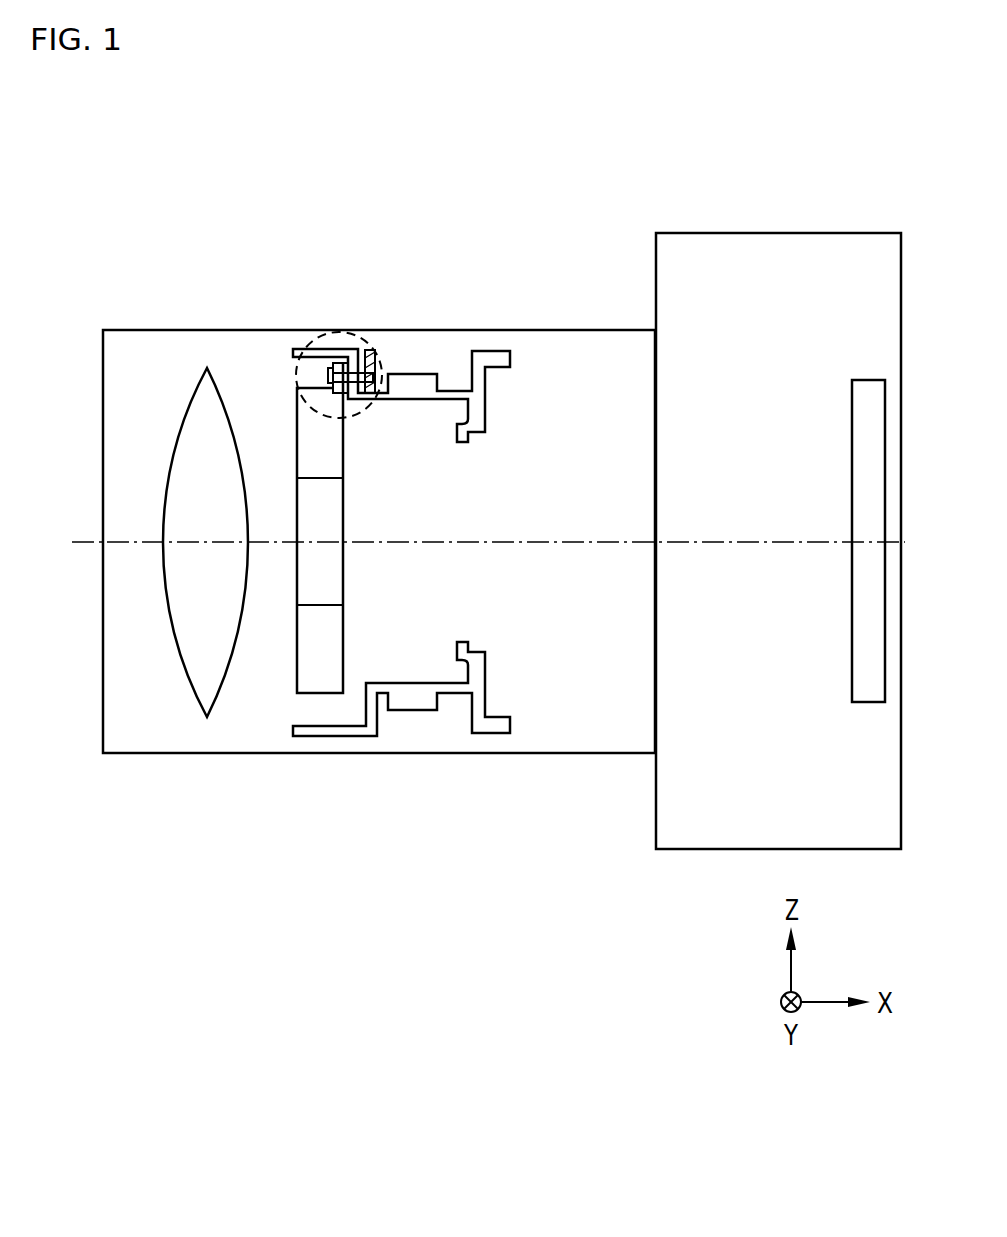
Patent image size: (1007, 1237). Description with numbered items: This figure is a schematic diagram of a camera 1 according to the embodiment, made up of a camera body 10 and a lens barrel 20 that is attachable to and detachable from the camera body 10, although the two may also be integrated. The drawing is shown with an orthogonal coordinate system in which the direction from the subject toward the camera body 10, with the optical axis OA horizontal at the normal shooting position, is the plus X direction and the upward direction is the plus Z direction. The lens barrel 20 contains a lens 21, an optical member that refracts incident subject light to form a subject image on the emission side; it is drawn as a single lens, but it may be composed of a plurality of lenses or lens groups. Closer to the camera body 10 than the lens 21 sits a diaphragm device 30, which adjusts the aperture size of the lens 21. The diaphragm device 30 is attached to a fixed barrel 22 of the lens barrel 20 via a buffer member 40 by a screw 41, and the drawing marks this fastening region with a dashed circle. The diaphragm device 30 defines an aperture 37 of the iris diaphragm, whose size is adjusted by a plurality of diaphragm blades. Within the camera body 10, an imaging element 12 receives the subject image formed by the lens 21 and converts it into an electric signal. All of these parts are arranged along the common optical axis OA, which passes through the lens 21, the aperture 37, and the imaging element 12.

The camera 1 is at (622, 177).
The camera body 10 is at (834, 232).
The imaging element 12 is at (886, 428).
The lens barrel 20 is at (430, 330).
The lens 21 is at (212, 362).
The fixed barrel 22 is at (342, 737).
The diaphragm device 30 is at (298, 600).
The aperture 37 is at (322, 480).
The buffer member 40 is at (344, 316).
The screw 41 is at (327, 378).
The optical axis OA is at (85, 542).